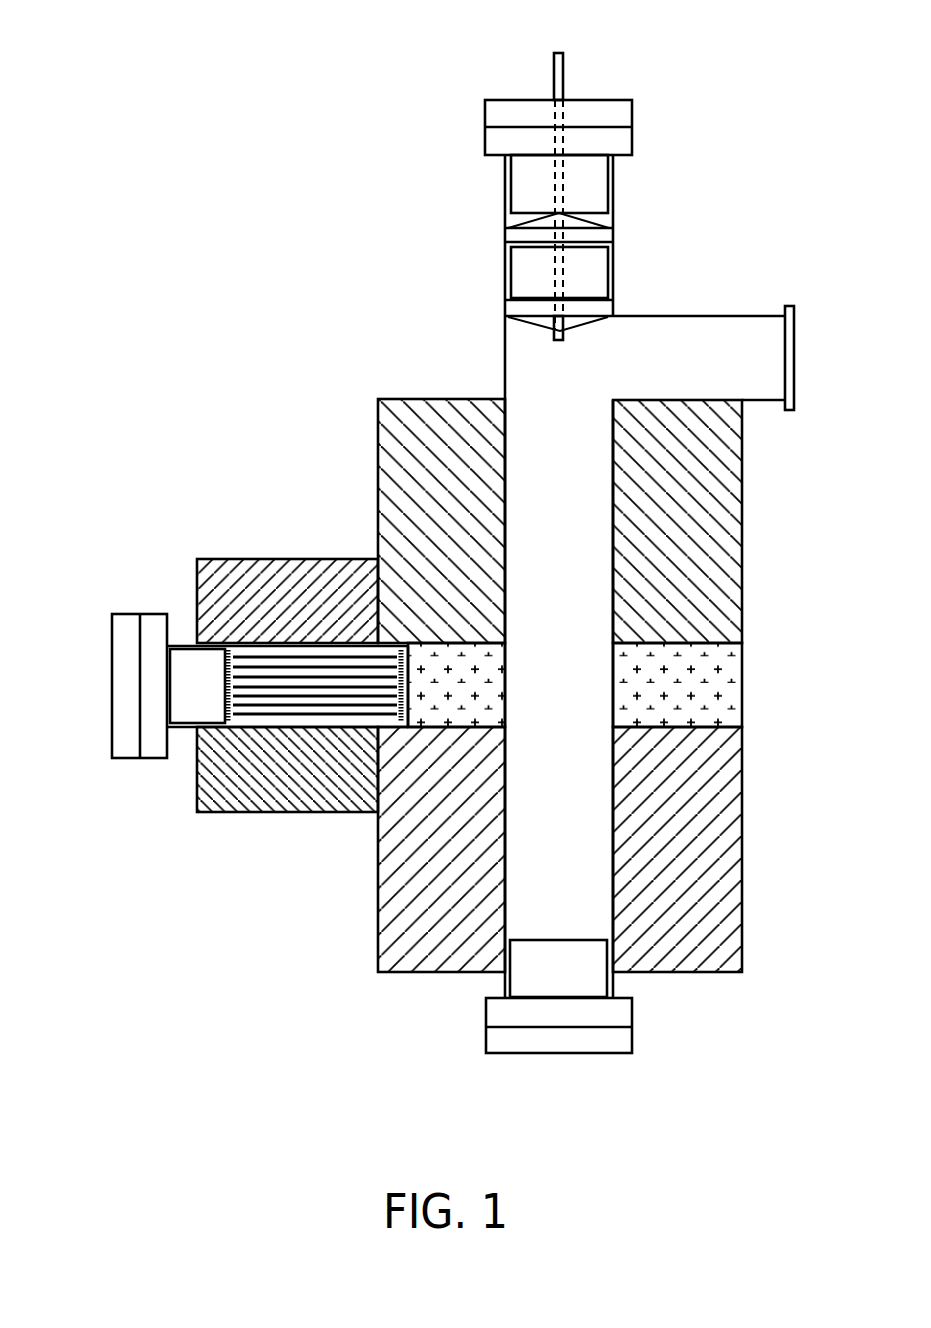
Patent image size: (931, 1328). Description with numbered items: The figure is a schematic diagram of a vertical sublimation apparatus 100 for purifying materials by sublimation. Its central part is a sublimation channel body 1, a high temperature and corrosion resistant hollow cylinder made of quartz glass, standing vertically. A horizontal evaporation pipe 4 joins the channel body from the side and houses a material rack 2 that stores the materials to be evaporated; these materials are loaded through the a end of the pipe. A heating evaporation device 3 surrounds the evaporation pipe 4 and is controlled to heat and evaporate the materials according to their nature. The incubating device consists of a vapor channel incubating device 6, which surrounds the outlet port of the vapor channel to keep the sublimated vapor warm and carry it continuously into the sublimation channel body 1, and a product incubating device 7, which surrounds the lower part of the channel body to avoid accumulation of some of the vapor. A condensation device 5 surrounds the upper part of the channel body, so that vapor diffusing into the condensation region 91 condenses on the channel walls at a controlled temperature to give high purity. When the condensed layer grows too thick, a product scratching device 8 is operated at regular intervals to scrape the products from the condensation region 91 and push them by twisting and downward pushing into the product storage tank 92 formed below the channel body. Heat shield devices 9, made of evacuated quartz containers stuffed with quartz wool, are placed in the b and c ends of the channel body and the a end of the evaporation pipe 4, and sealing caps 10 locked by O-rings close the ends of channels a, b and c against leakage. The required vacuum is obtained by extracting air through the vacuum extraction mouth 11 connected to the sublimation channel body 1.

The vertical sublimation apparatus 100 is at (209, 115).
The sublimation channel body 1 is at (503, 367).
The material rack 2 is at (285, 697).
The heating evaporation device 3 is at (302, 570).
The evaporation pipe 4 is at (277, 643).
The condensation device 5 is at (730, 510).
The vapor channel incubating device 6 is at (495, 690).
The product incubating device 7 is at (730, 862).
The product scratching device 8 is at (598, 279).
The heat shield device 9 is at (598, 196).
The sealing cap 10 is at (612, 110).
The vacuum extraction mouth 11 is at (772, 362).
The condensation region 91 is at (560, 450).
The product storage tank 92 is at (560, 873).